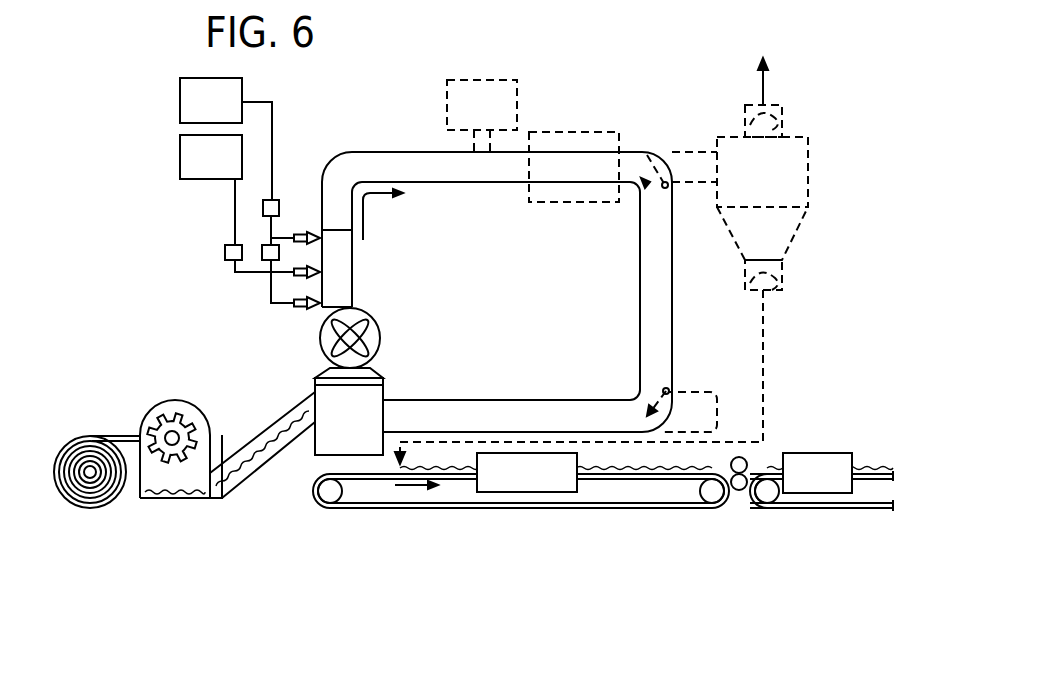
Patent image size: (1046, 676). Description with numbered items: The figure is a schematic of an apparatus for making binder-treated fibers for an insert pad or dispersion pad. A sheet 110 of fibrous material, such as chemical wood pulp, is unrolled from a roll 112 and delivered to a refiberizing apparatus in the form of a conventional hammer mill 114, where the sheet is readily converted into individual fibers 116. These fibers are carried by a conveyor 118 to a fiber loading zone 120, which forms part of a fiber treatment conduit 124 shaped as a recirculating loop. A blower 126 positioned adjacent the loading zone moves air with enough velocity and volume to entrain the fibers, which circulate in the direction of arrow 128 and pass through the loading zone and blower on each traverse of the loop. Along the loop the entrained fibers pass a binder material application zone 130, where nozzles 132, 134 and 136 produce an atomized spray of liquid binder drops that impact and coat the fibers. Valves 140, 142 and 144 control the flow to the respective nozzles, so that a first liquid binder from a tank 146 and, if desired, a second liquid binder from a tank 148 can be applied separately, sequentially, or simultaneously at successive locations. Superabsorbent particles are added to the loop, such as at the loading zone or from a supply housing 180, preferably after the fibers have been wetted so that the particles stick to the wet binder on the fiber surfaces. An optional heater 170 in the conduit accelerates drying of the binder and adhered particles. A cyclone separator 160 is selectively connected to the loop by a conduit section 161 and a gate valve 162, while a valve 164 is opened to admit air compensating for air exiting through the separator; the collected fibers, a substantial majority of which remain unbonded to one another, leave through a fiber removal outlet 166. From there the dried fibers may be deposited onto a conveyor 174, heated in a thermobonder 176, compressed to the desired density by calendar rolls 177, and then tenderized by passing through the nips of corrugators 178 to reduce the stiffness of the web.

The sheet 110 is at (120, 436).
The roll 112 is at (75, 506).
The hammer mill 114 is at (188, 400).
The individual fibers 116 is at (195, 500).
The conveyor 118 is at (258, 470).
The fiber loading zone 120 is at (377, 410).
The fiber treatment conduit 124 is at (492, 193).
The blower 126 is at (372, 325).
The arrow 128 is at (363, 217).
The binder material application zone 130 is at (352, 283).
The nozzle 132 is at (298, 308).
The nozzle 134 is at (299, 277).
The nozzle 136 is at (297, 232).
The valve 140 is at (225, 252).
The valve 142 is at (262, 254).
The valve 144 is at (263, 208).
The tank 146 is at (180, 163).
The tank 148 is at (180, 105).
The cyclone separator 160 is at (733, 135).
The conduit section 161 is at (690, 152).
The gate valve 162 is at (643, 184).
The valve 164 is at (643, 383).
The fiber removal outlet 166 is at (763, 330).
The heater 170 is at (580, 132).
The conveyor 174 is at (455, 470).
The thermobonder 176 is at (522, 492).
The calendar rolls 177 is at (741, 492).
The corrugators 178 is at (815, 453).
The supply housing 180 is at (447, 107).